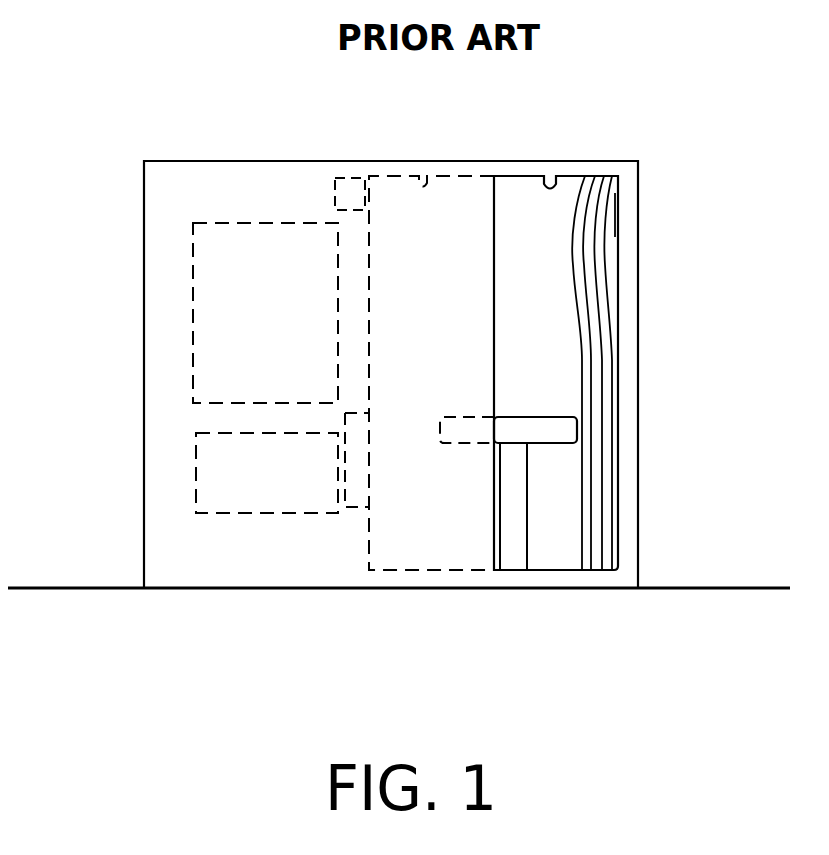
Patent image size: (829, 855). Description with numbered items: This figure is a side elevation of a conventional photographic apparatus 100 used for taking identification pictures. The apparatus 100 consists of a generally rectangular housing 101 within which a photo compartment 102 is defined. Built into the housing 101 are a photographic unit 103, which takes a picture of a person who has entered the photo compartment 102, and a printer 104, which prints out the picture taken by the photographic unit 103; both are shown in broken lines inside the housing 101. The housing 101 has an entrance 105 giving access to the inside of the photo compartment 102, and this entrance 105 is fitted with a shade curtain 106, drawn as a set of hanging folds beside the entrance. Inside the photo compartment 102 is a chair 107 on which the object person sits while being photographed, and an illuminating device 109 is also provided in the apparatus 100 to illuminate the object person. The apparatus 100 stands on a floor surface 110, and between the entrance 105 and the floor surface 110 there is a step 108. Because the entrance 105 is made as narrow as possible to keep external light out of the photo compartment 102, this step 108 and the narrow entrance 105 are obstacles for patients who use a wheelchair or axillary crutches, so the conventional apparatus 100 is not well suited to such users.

The photographic apparatus 100 is at (508, 137).
The housing 101 is at (263, 161).
The photo compartment 102 is at (421, 176).
The photographic unit 103 is at (230, 292).
The printer 104 is at (258, 497).
The entrance 105 is at (575, 176).
The shade curtain 106 is at (593, 252).
The chair 107 is at (548, 428).
The step 108 is at (550, 578).
The illuminating device 109 is at (350, 180).
The floor surface 110 is at (714, 583).